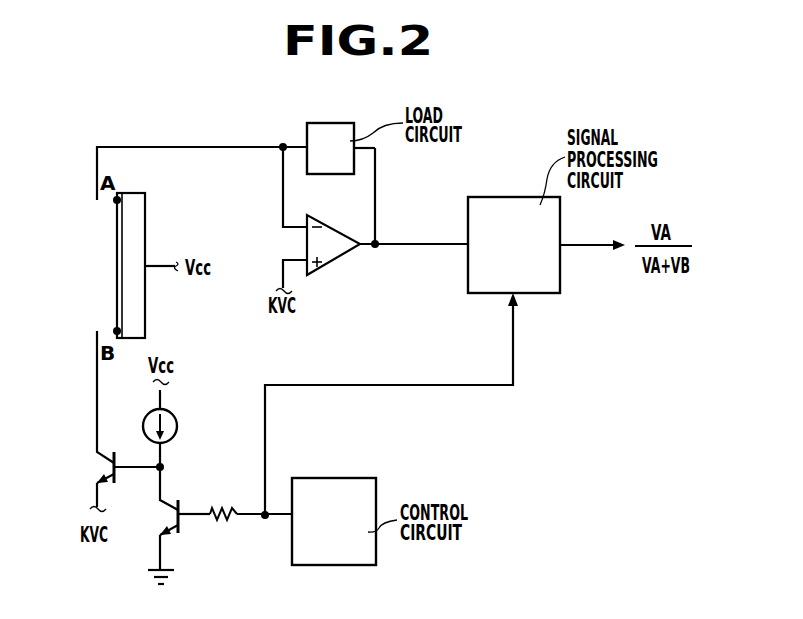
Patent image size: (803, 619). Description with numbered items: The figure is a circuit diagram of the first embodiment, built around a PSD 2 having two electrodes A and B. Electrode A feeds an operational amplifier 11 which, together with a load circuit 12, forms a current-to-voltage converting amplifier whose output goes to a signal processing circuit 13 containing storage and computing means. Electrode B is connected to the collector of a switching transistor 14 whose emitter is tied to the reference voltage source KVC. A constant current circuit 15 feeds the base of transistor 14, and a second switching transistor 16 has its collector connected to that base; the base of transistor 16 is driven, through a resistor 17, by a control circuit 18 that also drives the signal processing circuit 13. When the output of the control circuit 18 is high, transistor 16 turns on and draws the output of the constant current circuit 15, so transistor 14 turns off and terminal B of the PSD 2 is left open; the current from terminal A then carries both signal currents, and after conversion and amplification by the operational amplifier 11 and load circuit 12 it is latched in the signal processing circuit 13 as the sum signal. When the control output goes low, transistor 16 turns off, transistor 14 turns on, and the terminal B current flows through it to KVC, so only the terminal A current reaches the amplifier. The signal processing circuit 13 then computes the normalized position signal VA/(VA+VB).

The PSD 2 is at (128, 270).
The operational amplifier 11 is at (340, 258).
The load circuit 12 is at (340, 123).
The signal processing circuit 13 is at (517, 197).
The switching transistor 14 is at (108, 470).
The constant current circuit 15 is at (177, 426).
The switching transistor 16 is at (168, 520).
The resistor 17 is at (221, 512).
The control circuit 18 is at (343, 478).